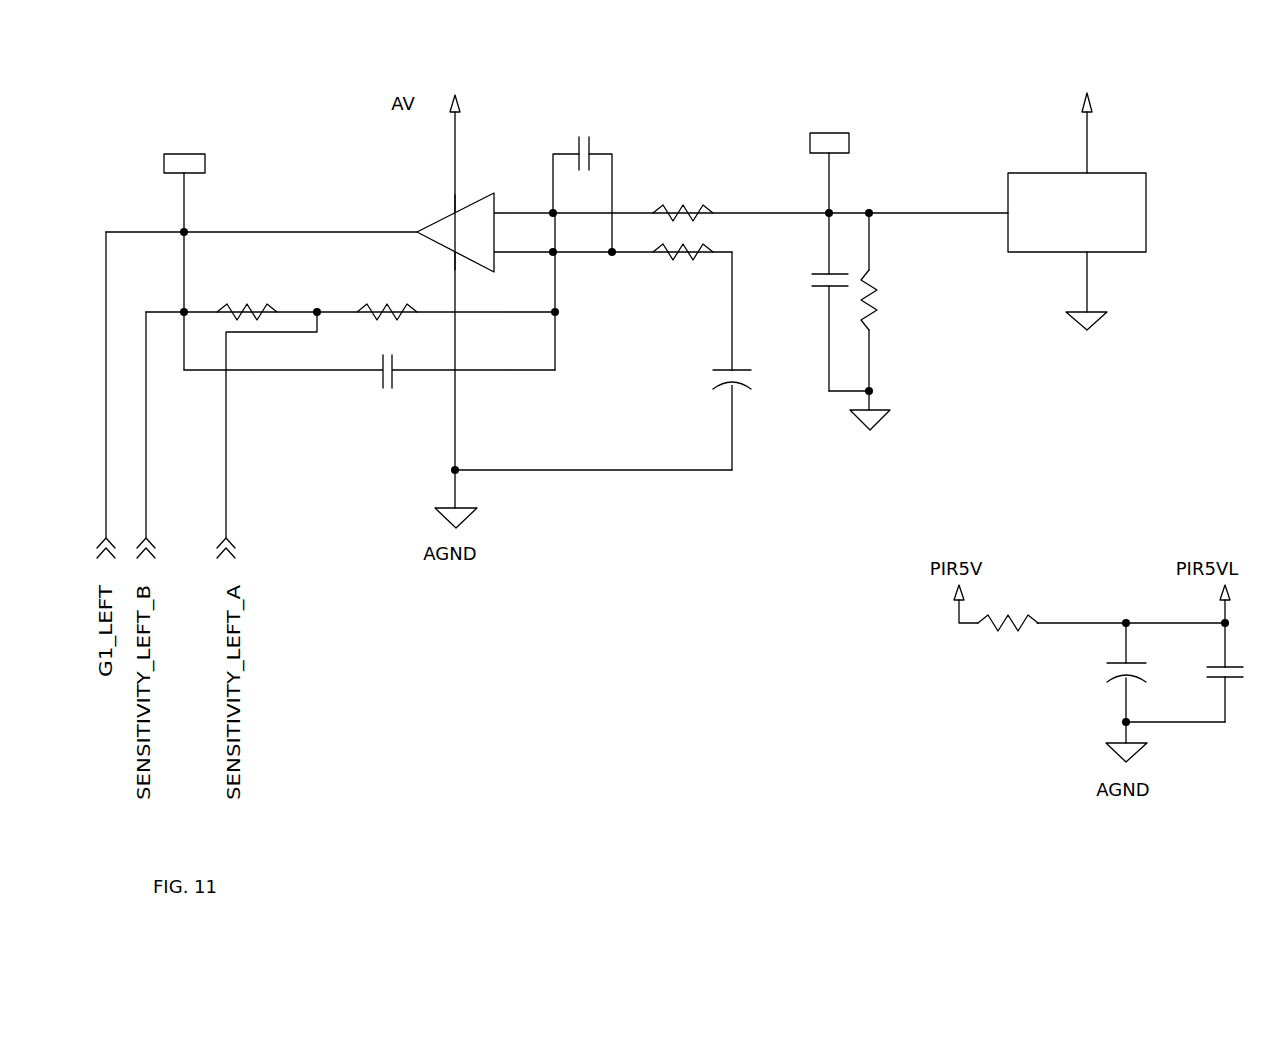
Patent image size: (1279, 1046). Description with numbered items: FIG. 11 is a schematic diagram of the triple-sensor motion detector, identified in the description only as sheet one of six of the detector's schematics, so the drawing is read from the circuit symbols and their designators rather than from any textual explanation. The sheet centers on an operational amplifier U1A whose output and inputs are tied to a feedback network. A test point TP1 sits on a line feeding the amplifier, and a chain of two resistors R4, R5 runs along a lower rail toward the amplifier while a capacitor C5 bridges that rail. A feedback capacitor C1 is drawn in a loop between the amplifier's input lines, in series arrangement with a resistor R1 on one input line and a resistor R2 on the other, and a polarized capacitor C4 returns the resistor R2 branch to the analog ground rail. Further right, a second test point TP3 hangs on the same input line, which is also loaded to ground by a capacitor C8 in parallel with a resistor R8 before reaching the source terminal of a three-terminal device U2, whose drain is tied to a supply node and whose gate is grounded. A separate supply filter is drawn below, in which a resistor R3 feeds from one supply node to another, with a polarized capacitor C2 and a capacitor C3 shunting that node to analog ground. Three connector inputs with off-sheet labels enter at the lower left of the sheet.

The test point TP1 is at (184, 151).
The resistor R4 1.05M R4 is at (243, 286).
The resistor R5 1.05M R5 is at (387, 287).
The capacitor C5 0.01uF C5 is at (364, 363).
The operational amplifier U1A LM358 U1A is at (445, 229).
The capacitor C1 0.01uF C1 is at (559, 172).
The resistor R1 18.2K R1 is at (677, 188).
The resistor R2 36.5K R2 is at (663, 268).
The capacitor C4 10UF C4 is at (707, 383).
The test point TP3 is at (829, 161).
The capacitor C8 0.1uF C8 is at (819, 302).
The resistor R8 36.5K R8 is at (887, 337).
The transistor U2 is at (1099, 218).
The resistor R3 36.5K R3 is at (1004, 625).
The capacitor C2 100UF C2 is at (1094, 672).
The capacitor C3 0.1uF C3 is at (1200, 672).